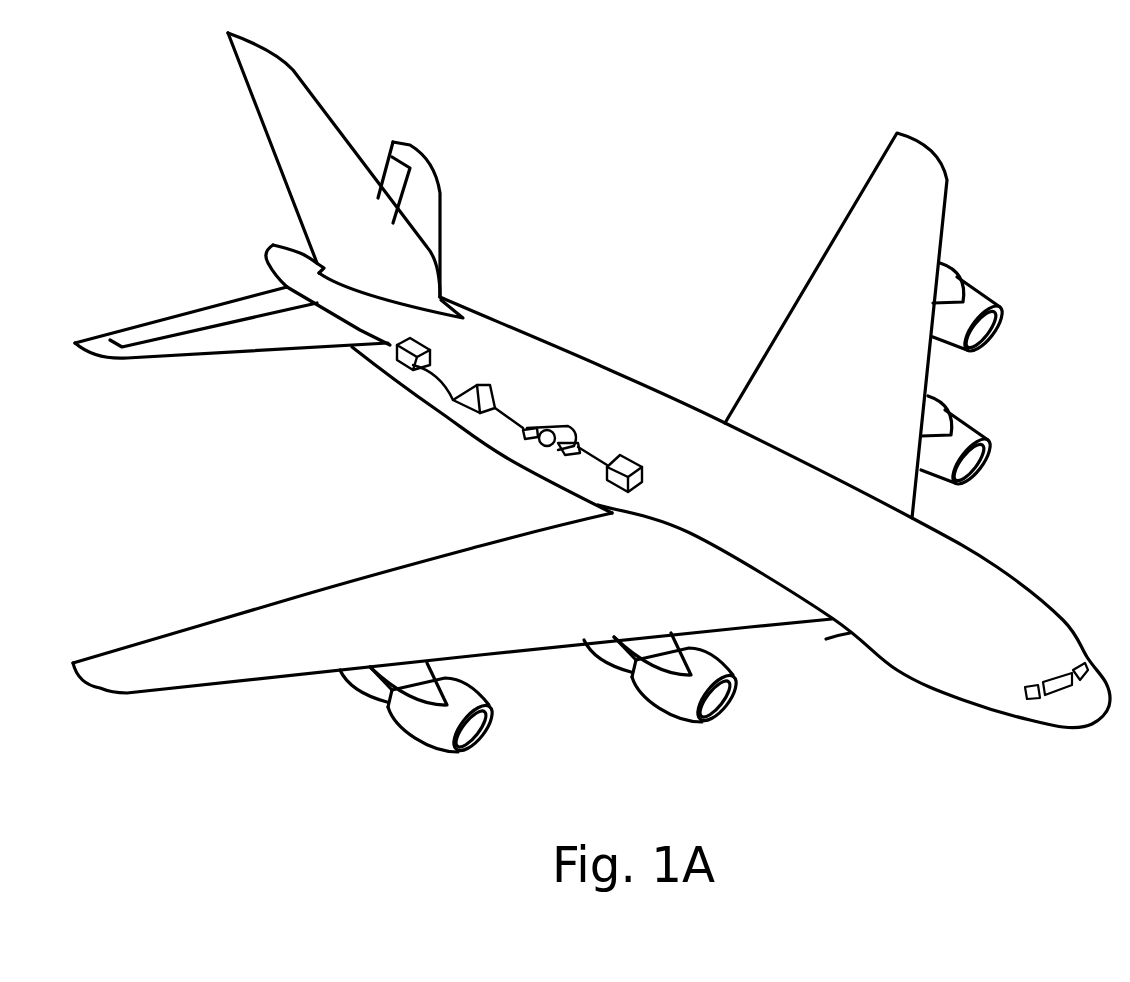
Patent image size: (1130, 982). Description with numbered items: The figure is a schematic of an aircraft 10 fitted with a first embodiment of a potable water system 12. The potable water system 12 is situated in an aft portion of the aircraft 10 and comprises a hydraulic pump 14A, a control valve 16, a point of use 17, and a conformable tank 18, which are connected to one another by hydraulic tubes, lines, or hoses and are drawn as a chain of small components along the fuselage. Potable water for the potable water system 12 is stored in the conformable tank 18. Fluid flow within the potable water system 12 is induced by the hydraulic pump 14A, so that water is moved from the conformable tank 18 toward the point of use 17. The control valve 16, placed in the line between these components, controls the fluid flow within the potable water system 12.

The aircraft 10 is at (595, 395).
The potable water system 12 is at (523, 383).
The hydraulic pump 14A is at (545, 447).
The control valve 16 is at (453, 402).
The point of use 17 is at (393, 361).
The conformable tank 18 is at (607, 473).